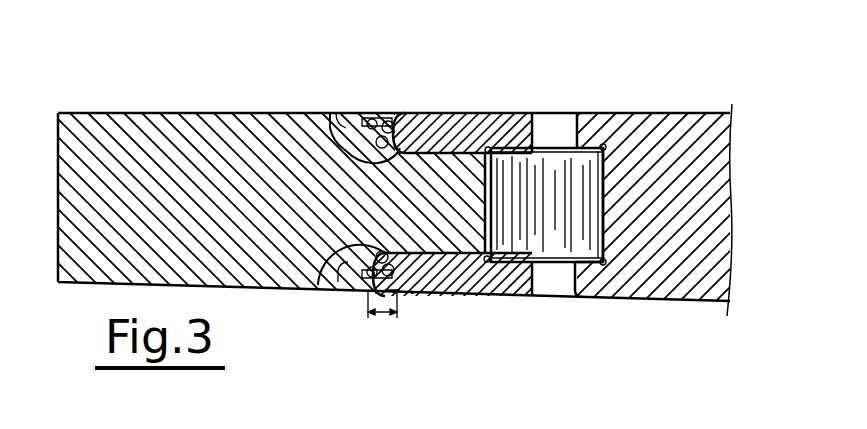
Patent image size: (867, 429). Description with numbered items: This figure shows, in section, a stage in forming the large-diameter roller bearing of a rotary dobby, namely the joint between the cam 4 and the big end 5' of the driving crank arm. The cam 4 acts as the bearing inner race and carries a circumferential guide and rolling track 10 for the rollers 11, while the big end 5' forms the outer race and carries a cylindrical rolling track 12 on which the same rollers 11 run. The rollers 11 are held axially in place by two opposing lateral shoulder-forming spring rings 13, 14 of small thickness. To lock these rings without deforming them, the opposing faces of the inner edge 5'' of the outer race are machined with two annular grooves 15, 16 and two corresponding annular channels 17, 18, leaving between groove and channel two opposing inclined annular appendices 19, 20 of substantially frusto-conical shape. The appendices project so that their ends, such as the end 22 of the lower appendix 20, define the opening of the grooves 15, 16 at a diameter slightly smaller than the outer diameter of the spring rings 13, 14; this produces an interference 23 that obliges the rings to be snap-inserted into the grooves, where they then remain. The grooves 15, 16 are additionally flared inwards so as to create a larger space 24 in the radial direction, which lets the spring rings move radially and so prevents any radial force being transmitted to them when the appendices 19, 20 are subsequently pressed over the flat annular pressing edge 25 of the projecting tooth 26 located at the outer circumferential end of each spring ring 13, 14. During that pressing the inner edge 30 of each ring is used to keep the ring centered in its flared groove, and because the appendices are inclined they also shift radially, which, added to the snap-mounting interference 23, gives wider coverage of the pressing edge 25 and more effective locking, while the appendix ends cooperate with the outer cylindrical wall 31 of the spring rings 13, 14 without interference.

The cam 4 is at (653, 143).
The big end of the crank arm 5' is at (375, 196).
The inner edge of the outer race 5'' is at (471, 294).
The circumferential guide and rolling track 10 is at (593, 263).
The rollers 11 is at (549, 175).
The cylindrical rolling track 12 is at (487, 113).
The shoulder-forming spring ring 13 is at (460, 113).
The shoulder-forming spring ring 14 is at (478, 290).
The annular groove 15 is at (397, 115).
The annular groove 16 is at (397, 290).
The annular channel 17 is at (340, 115).
The annular channel 18 is at (338, 290).
The inclined annular appendix 19 is at (380, 113).
The inclined annular appendix 20 is at (368, 292).
The end of annular appendix 22 is at (390, 290).
The interference 23 is at (385, 318).
The larger space 24 is at (367, 115).
The flat annular pressing edge 25 is at (430, 113).
The projecting tooth 26 is at (312, 113).
The inner edge of the spring ring 30 is at (535, 147).
The outer cylindrical wall of the spring ring 31 is at (417, 113).